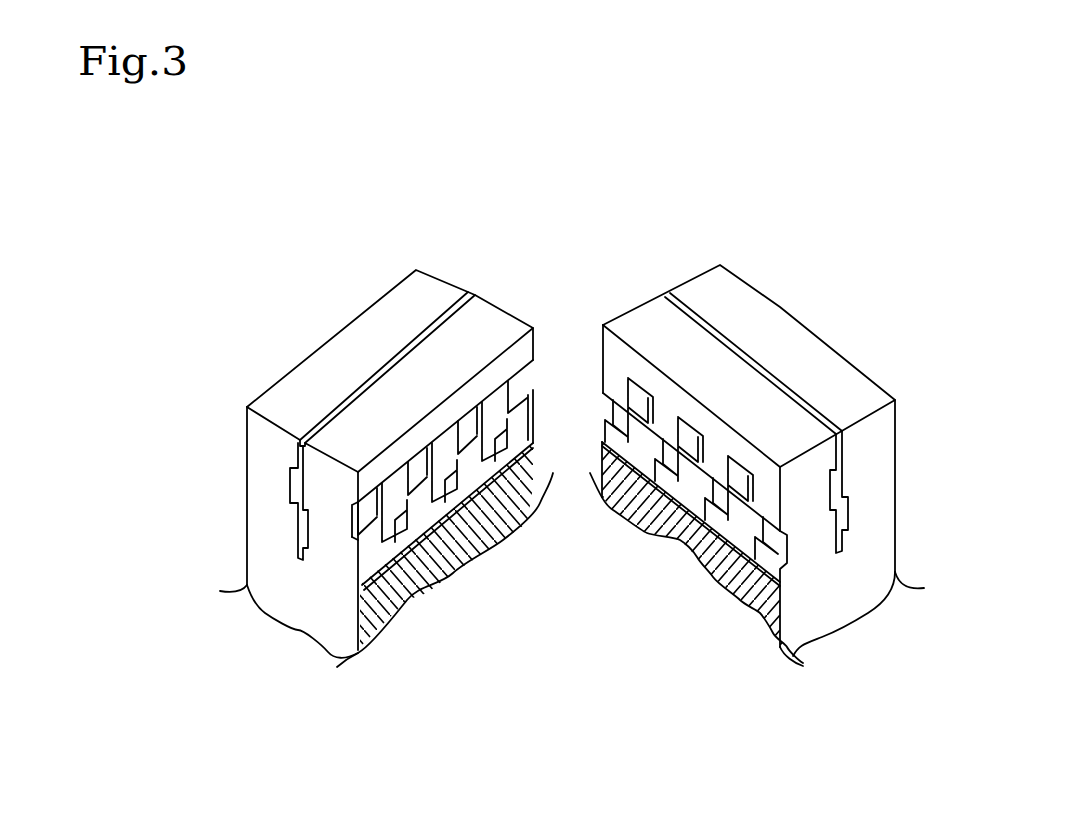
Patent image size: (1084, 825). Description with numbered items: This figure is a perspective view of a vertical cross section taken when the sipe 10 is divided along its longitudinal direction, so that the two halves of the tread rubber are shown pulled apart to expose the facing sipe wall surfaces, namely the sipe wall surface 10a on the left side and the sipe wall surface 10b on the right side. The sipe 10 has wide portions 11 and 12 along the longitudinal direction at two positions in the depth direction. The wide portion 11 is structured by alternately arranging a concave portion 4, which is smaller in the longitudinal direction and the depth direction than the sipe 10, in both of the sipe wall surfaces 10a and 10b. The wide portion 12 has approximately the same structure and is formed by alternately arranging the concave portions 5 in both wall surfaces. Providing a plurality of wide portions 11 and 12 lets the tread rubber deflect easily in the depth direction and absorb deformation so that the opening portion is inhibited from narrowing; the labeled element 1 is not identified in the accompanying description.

The connector housing 1 is at (282, 370).
The concave portion 4 is at (423, 452).
The concave portion 5 is at (393, 542).
The sipe 10 is at (383, 372).
The sipe wall surface 10a is at (505, 363).
The sipe wall surface 10b is at (636, 360).
The wide portion 11 is at (342, 521).
The wide portion 12 is at (377, 541).